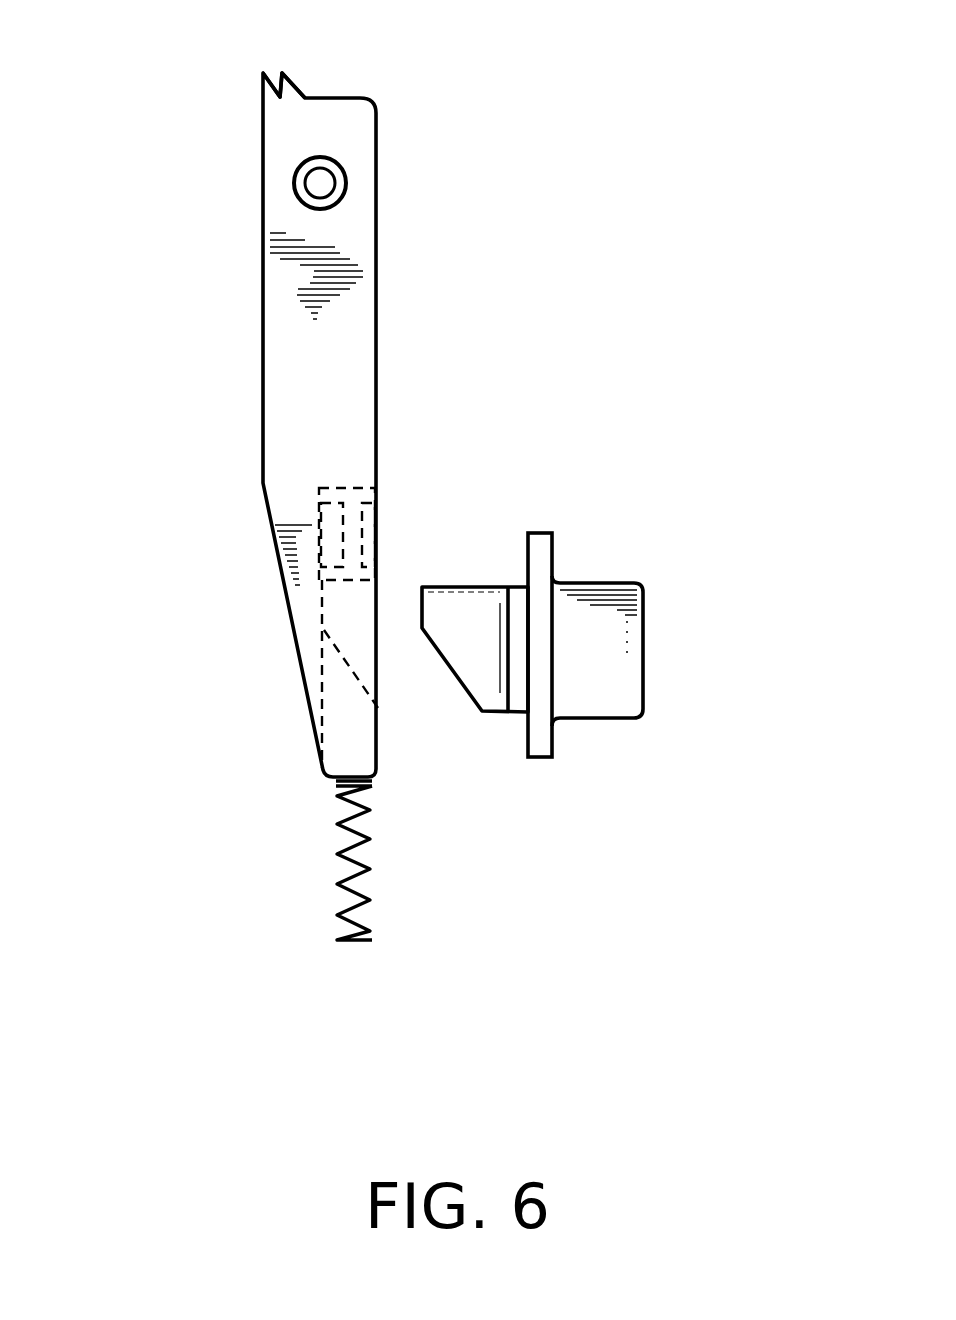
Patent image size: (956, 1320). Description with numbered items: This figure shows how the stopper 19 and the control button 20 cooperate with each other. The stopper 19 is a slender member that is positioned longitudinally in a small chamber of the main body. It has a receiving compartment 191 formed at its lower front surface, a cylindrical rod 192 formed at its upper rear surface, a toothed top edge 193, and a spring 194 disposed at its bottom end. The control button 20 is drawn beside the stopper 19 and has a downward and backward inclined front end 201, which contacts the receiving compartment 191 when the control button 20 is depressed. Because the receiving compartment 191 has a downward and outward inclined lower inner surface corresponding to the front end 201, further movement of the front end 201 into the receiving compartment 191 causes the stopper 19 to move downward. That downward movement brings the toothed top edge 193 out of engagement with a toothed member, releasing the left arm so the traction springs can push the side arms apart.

The stopper 19 is at (356, 411).
The receiving compartment 191 is at (340, 606).
The cylindrical rod 192 is at (343, 197).
The toothed top edge 193 is at (283, 74).
The spring 194 is at (371, 900).
The control button 20 is at (600, 610).
The front end 201 is at (473, 653).